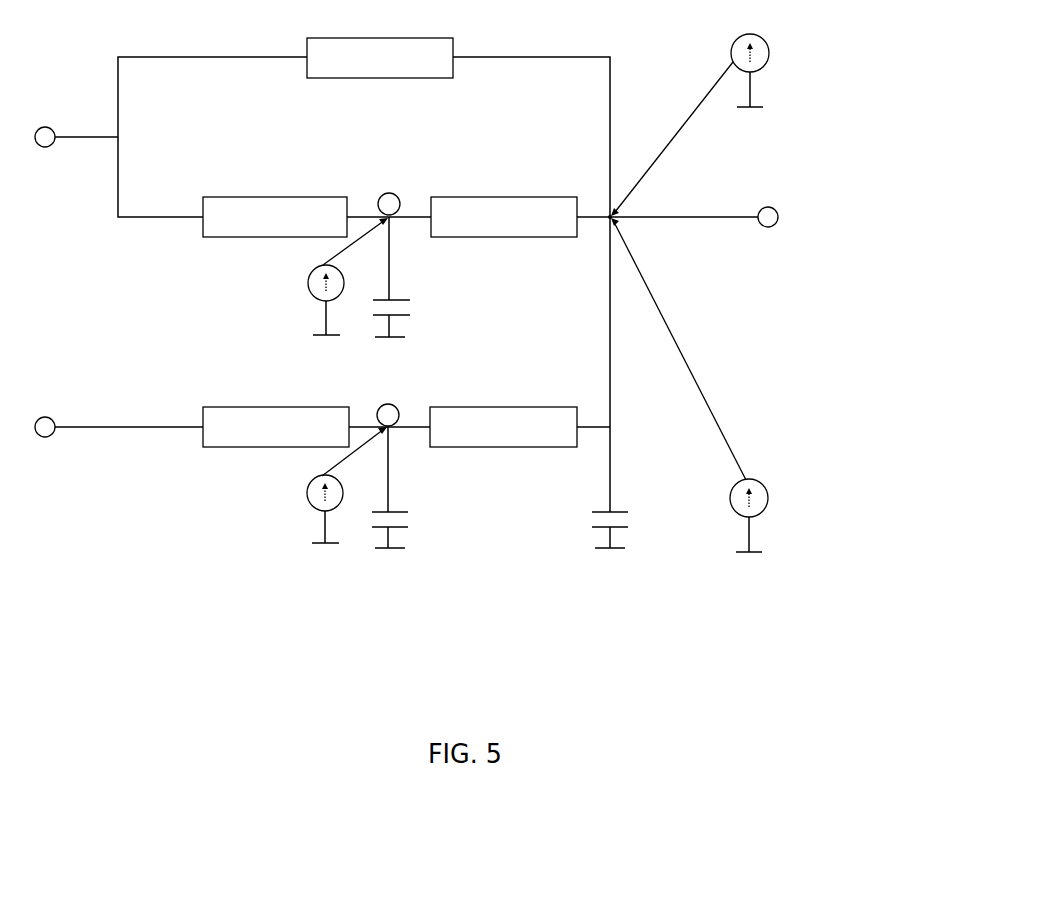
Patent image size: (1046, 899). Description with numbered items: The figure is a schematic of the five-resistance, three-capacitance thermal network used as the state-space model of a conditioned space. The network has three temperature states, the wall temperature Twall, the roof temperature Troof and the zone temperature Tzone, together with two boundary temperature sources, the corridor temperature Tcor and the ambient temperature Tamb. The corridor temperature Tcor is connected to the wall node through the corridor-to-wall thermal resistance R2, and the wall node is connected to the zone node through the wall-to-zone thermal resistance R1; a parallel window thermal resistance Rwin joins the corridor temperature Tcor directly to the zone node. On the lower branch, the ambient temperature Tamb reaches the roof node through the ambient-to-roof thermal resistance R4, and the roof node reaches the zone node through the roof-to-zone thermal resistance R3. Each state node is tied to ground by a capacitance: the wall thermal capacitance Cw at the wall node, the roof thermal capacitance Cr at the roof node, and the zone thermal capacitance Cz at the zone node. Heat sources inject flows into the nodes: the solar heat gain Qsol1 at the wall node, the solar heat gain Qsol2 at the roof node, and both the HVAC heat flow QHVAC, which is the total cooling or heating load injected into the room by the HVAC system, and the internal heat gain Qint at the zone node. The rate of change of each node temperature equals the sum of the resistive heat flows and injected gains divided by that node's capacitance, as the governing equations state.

The window thermal resistance Rwin is at (380, 58).
The wall-to-zone thermal resistance R1 is at (504, 218).
The corridor-to-wall thermal resistance R2 is at (275, 218).
The roof-to-zone thermal resistance R3 is at (503, 428).
The ambient-to-roof thermal resistance R4 is at (276, 428).
The wall thermal capacitance Cw is at (424, 277).
The roof thermal capacitance Cr is at (423, 487).
The zone thermal capacitance Cz is at (637, 520).
The solar heat gain on wall Qsol1 is at (287, 276).
The solar heat gain on roof Qsol2 is at (286, 485).
The HVAC heat flow QHVAC is at (767, 121).
The internal heat gain Qint is at (754, 385).
The corridor temperature Tcor is at (51, 119).
The ambient temperature Tamb is at (60, 402).
The wall temperature Twall is at (396, 176).
The roof temperature Troof is at (397, 392).
The zone temperature Tzone is at (769, 192).